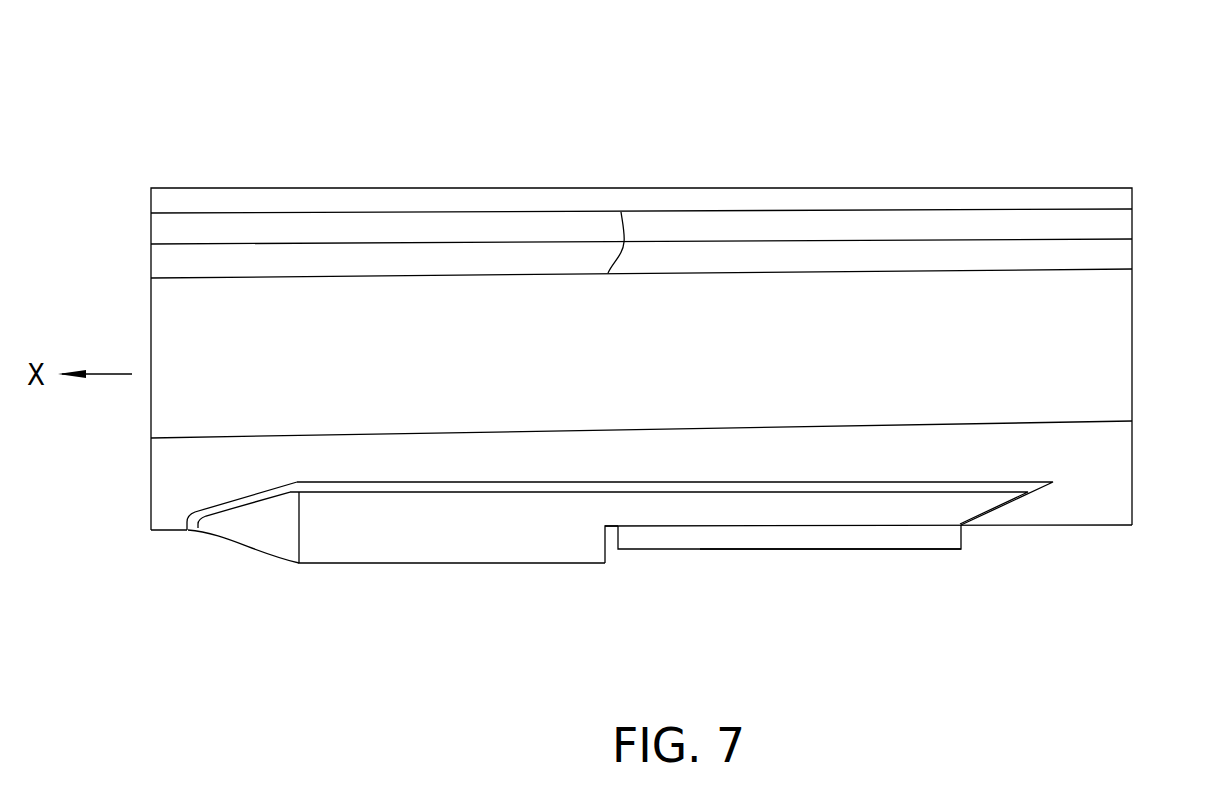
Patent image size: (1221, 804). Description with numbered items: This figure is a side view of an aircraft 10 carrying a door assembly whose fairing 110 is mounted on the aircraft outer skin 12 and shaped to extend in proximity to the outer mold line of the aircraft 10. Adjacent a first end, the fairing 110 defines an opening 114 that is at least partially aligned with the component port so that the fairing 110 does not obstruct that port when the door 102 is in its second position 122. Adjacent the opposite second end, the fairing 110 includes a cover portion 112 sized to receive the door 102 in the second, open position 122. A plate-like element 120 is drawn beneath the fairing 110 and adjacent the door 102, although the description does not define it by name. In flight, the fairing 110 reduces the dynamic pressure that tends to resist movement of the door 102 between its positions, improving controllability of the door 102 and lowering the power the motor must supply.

The aircraft 10 is at (992, 98).
The aircraft outer skin 12 is at (1132, 442).
The door 102 is at (920, 550).
The fairing 110 is at (310, 563).
The cover portion 112 is at (470, 563).
The opening 114 is at (647, 575).
The plate 120 is at (786, 593).
The second position 122 is at (381, 590).